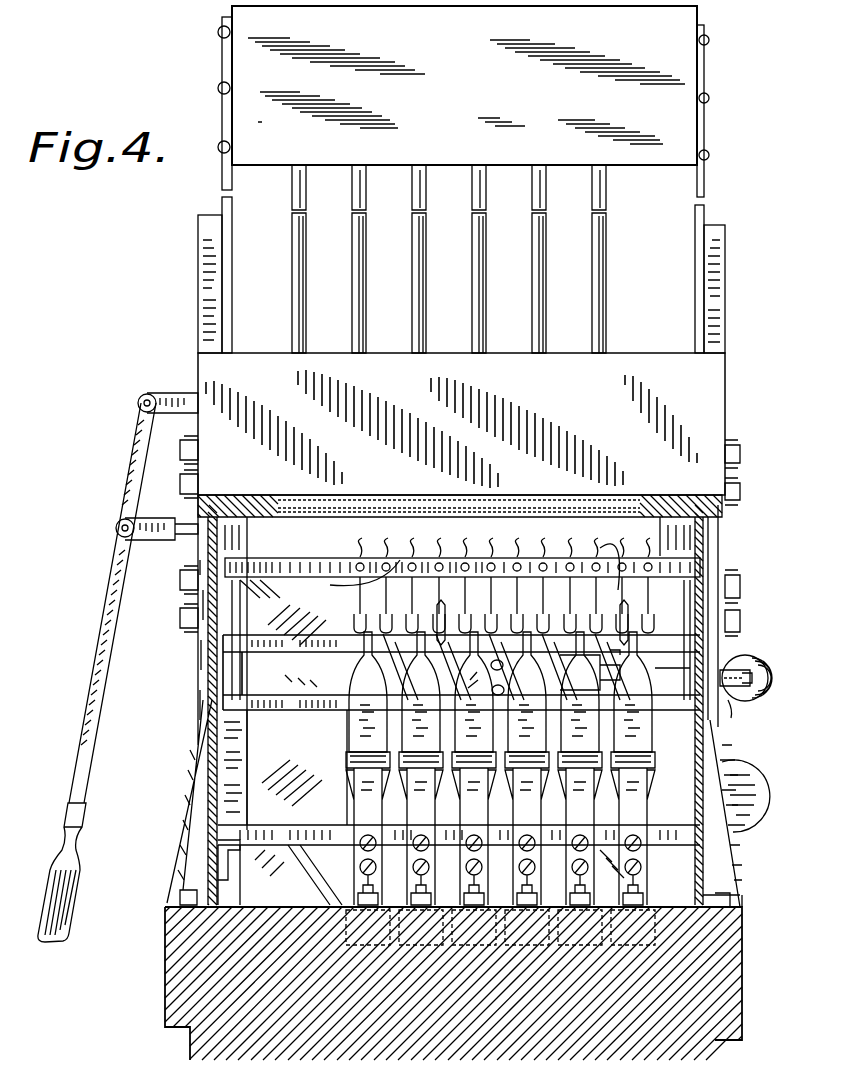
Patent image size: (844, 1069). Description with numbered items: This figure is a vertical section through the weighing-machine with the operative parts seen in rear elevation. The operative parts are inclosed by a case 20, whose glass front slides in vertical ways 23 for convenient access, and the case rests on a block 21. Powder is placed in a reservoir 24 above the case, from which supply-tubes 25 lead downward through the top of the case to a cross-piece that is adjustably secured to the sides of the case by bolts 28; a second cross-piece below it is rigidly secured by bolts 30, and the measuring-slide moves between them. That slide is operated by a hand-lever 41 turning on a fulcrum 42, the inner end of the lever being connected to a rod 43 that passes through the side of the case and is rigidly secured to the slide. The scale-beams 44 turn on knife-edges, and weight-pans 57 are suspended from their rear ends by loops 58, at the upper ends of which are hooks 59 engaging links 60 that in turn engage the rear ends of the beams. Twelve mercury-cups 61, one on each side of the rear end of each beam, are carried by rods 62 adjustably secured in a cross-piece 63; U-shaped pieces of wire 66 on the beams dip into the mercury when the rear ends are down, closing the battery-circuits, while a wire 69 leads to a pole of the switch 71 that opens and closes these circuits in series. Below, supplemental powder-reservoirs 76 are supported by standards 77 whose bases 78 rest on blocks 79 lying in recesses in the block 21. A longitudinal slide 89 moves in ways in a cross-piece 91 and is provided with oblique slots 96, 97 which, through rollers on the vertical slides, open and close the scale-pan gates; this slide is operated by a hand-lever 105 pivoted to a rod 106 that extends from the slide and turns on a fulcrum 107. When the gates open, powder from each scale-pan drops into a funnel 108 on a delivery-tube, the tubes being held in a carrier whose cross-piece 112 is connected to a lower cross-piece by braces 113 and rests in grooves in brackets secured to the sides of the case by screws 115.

The case 20 is at (722, 552).
The block 21 is at (453, 983).
The vertical ways 23 is at (198, 275).
The reservoir 24 is at (463, 101).
The supply-tubes 25 is at (449, 259).
The bolts 28 is at (180, 480).
The bolts 30 is at (180, 615).
The hand-lever 41 is at (96, 608).
The fulcrum 42 is at (138, 402).
The rod 43 is at (185, 538).
The scale-beams 44 is at (412, 603).
The weight-pans 57 is at (346, 760).
The loops 58 is at (435, 690).
The hooks 59 is at (350, 650).
The links 60 is at (330, 618).
The mercury-cups 61 is at (354, 622).
The rods 62 is at (330, 592).
The cross-piece 63 is at (315, 558).
The U-shaped pieces of wire 66 is at (560, 620).
The wire 69 is at (440, 945).
The switch 71 is at (746, 796).
The supplemental powder-reservoirs 76 is at (355, 712).
The standards 77 is at (350, 780).
The bases 78 is at (355, 900).
The blocks 79 is at (522, 945).
The longitudinal slide 89 is at (560, 690).
The cross-piece 91 is at (280, 712).
The oblique slot 96 is at (490, 662).
The oblique slot 97 is at (492, 698).
The hand-lever 105 is at (750, 668).
The rod 106 is at (672, 668).
The fulcrum 107 is at (746, 716).
The funnel 108 is at (345, 785).
The cross-piece 112 is at (270, 838).
The braces 113 is at (310, 880).
The screws 115 is at (205, 870).